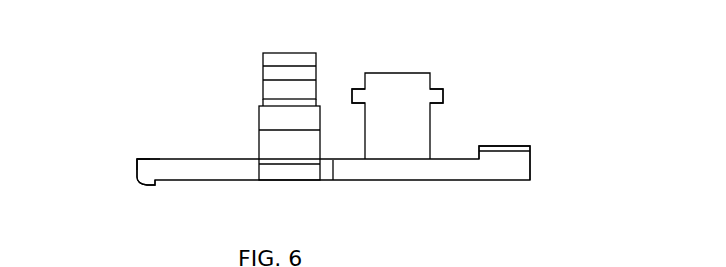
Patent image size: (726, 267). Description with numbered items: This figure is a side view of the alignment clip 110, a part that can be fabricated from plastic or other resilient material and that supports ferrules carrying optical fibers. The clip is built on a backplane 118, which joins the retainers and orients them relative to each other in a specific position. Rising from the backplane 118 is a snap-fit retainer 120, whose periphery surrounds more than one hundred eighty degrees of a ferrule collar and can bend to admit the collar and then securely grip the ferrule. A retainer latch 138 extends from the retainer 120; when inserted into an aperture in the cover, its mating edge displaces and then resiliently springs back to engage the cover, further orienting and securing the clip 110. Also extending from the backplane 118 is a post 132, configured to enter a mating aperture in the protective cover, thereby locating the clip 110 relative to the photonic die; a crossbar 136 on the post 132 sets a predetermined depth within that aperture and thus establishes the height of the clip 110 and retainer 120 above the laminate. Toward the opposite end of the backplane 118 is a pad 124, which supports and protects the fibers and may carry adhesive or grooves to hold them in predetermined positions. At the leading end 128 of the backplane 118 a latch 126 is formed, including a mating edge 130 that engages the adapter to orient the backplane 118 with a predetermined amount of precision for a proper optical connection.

The alignment clip 110 is at (131, 103).
The backplane 118 is at (387, 176).
The snap-fit retainer 120 is at (260, 133).
The pad 124 is at (505, 150).
The latch 126 is at (129, 178).
The leading clip end 128 is at (121, 155).
The mating edge 130 is at (164, 192).
The post 132 is at (393, 75).
The crossbar 136 is at (443, 95).
The retainer latch 138 is at (264, 77).